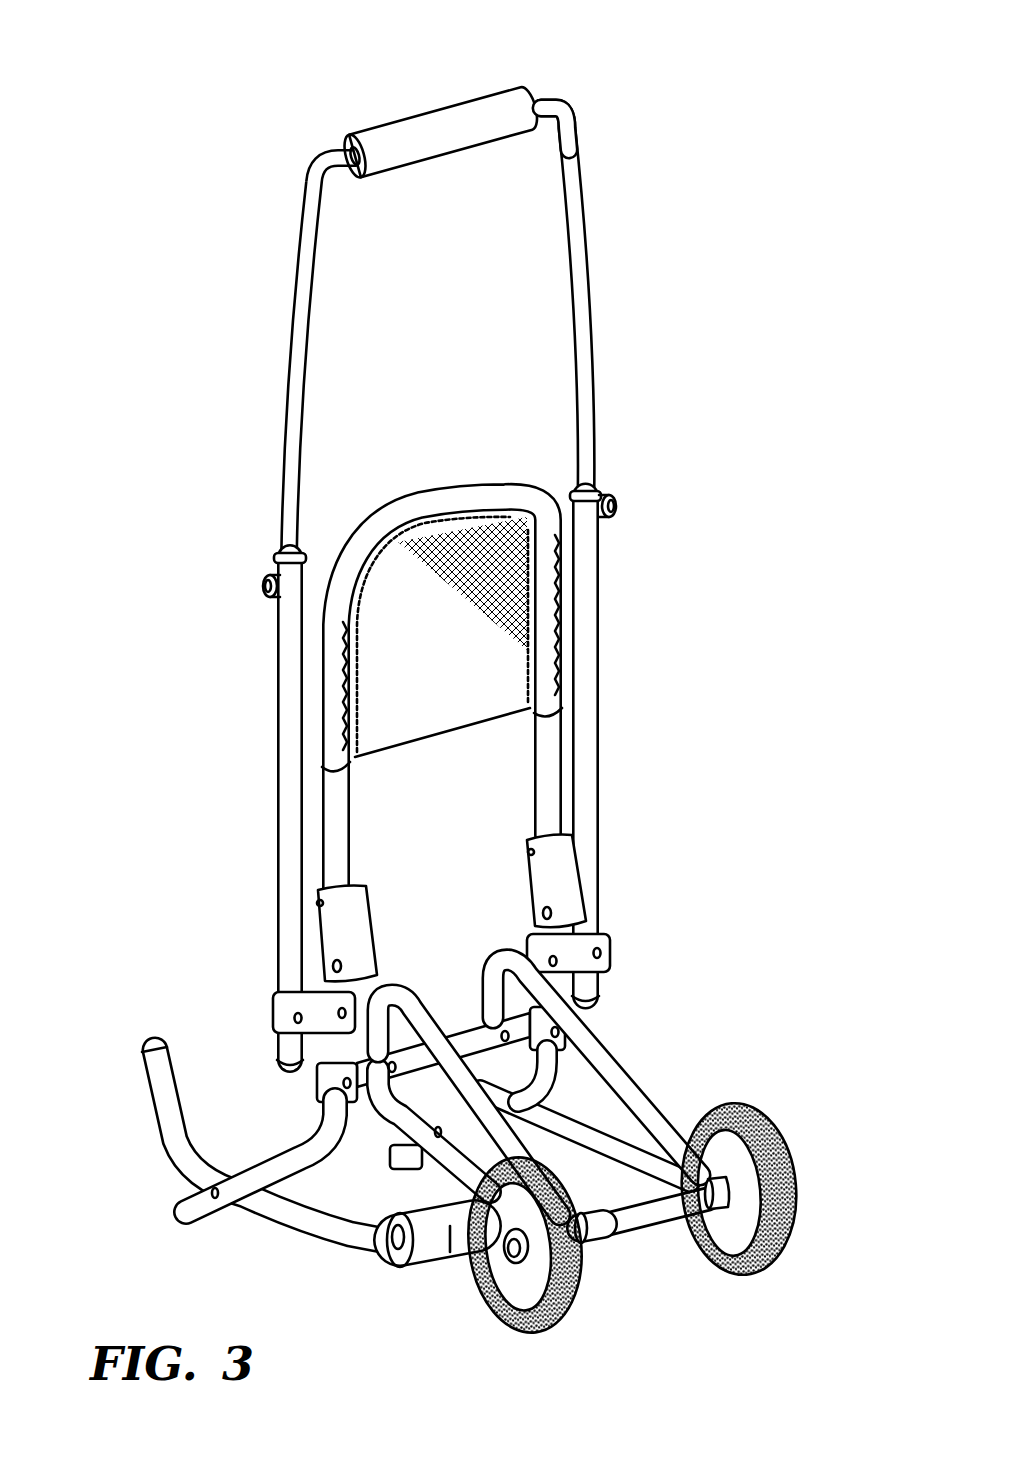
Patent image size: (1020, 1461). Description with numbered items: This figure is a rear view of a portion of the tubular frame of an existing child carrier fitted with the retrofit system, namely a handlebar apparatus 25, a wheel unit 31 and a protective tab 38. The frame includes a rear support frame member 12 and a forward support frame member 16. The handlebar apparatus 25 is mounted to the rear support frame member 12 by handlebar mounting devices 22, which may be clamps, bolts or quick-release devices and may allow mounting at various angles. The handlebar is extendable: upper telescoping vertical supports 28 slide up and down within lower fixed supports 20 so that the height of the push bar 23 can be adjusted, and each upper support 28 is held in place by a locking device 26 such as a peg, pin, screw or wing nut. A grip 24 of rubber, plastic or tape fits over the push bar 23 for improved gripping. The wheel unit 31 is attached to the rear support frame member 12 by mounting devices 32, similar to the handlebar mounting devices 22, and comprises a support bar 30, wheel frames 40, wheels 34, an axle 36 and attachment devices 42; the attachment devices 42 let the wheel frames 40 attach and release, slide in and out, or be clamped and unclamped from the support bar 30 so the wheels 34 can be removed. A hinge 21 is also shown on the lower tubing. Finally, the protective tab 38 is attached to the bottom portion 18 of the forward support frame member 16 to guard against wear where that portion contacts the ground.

The rear support frame member 12 is at (540, 775).
The forward support frame member 16 is at (170, 1115).
The bottom portion 18 is at (393, 1244).
The lower fixed supports 20 is at (597, 745).
The hinge 21 is at (560, 882).
The handlebar mounting devices 22 is at (605, 948).
The push bar 23 is at (540, 102).
The grip 24 is at (402, 134).
The handlebar apparatus 25 is at (445, 286).
The locking device 26 is at (613, 508).
The upper telescoping vertical supports 28 is at (578, 218).
The support bar 30 is at (470, 1037).
The wheel unit 31 is at (581, 1187).
The mounting devices 32 is at (560, 1040).
The wheels 34 is at (572, 1292).
The axle 36 is at (650, 1215).
The protective tab 38 is at (457, 1234).
The wheel frames 40 is at (508, 965).
The attachment devices 42 is at (553, 1043).